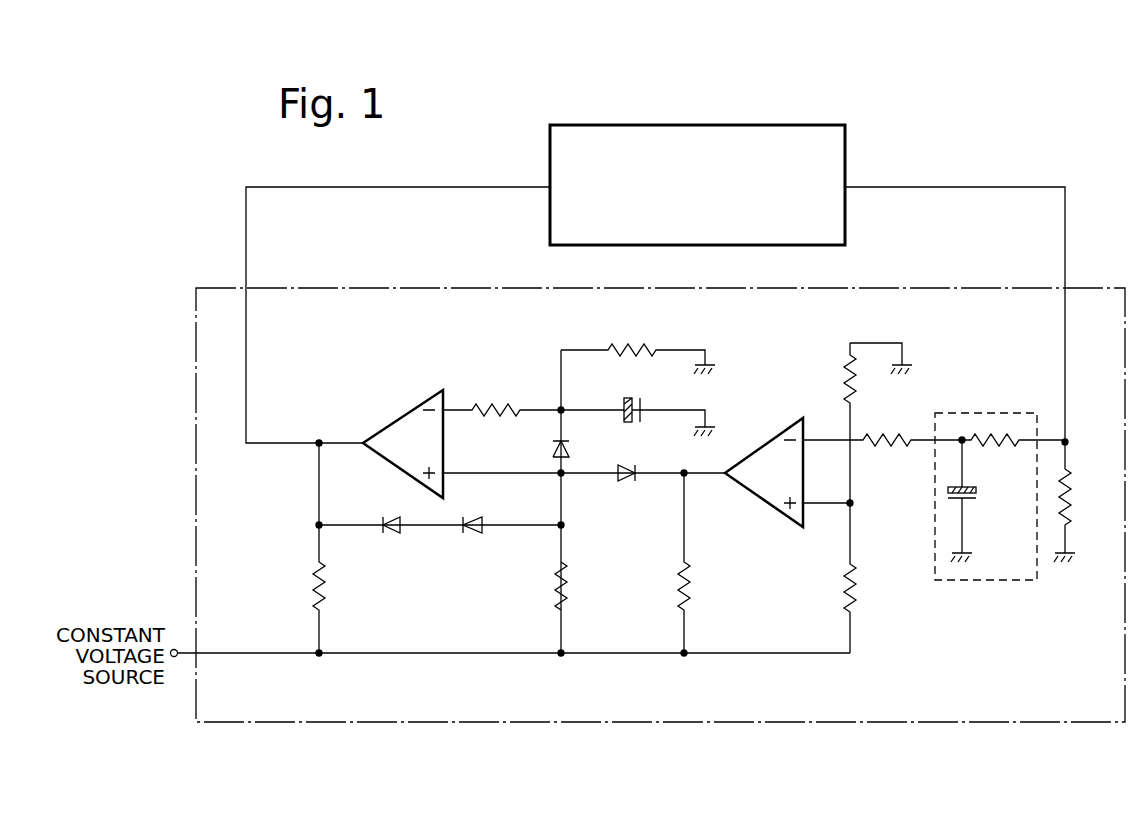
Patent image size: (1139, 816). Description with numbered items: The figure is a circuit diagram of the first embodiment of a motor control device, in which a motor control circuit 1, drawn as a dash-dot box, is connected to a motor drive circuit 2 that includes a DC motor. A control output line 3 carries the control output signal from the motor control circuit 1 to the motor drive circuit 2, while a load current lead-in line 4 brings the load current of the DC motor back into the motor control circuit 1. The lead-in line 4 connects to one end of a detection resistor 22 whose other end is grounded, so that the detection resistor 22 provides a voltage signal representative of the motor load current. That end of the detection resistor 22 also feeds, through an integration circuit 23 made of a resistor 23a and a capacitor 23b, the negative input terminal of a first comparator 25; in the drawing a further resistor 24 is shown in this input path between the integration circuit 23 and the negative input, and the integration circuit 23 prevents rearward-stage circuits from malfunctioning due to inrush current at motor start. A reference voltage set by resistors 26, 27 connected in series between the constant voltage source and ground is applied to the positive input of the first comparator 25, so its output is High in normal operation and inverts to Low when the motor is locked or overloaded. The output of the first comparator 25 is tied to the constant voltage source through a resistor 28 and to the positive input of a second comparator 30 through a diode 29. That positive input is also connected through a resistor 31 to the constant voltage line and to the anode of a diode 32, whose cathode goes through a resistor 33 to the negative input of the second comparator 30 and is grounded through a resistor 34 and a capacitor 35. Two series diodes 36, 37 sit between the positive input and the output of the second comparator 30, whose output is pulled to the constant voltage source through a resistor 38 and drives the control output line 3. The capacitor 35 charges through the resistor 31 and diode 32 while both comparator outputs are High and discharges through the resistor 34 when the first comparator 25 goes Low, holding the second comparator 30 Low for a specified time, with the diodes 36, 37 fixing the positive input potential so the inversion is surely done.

The motor control circuit 1 is at (196, 443).
The motor drive circuit 2 is at (649, 125).
The control output line 3 is at (246, 224).
The load current lead-in line 4 is at (912, 187).
The detection resistor 22 is at (1072, 498).
The integration circuit 23 is at (1000, 462).
The resistor 23a is at (995, 448).
The capacitor 23b is at (975, 497).
The resistor 24 is at (893, 448).
The first comparator 25 is at (747, 492).
The resistor 26 is at (843, 382).
The resistor 27 is at (844, 572).
The resistor 28 is at (690, 586).
The diode 29 is at (626, 484).
The second comparator 30 is at (391, 425).
The resistor 31 is at (569, 586).
The diode 32 is at (553, 449).
The resistor 33 is at (510, 403).
The resistor 34 is at (618, 348).
The capacitor 35 is at (634, 400).
The diode 36 is at (474, 534).
The diode 37 is at (392, 534).
The resistor 38 is at (312, 586).